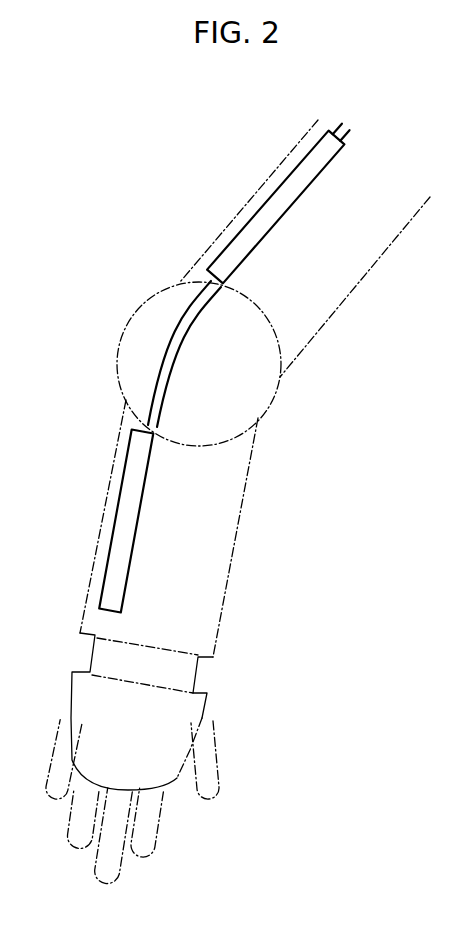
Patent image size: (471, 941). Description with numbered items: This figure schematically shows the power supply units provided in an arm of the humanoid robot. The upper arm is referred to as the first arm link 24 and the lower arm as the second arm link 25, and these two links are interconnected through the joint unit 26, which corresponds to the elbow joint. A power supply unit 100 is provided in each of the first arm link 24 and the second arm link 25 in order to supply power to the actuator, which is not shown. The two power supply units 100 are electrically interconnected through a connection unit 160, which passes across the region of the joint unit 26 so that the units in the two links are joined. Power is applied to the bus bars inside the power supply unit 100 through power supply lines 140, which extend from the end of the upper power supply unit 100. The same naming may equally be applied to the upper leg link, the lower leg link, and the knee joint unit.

The power supply unit 100 is at (236, 237).
The power supply line 140 is at (333, 128).
The connection unit 160 is at (153, 352).
The first arm link 24 is at (345, 297).
The second arm link 25 is at (240, 525).
The joint unit 26 is at (273, 397).